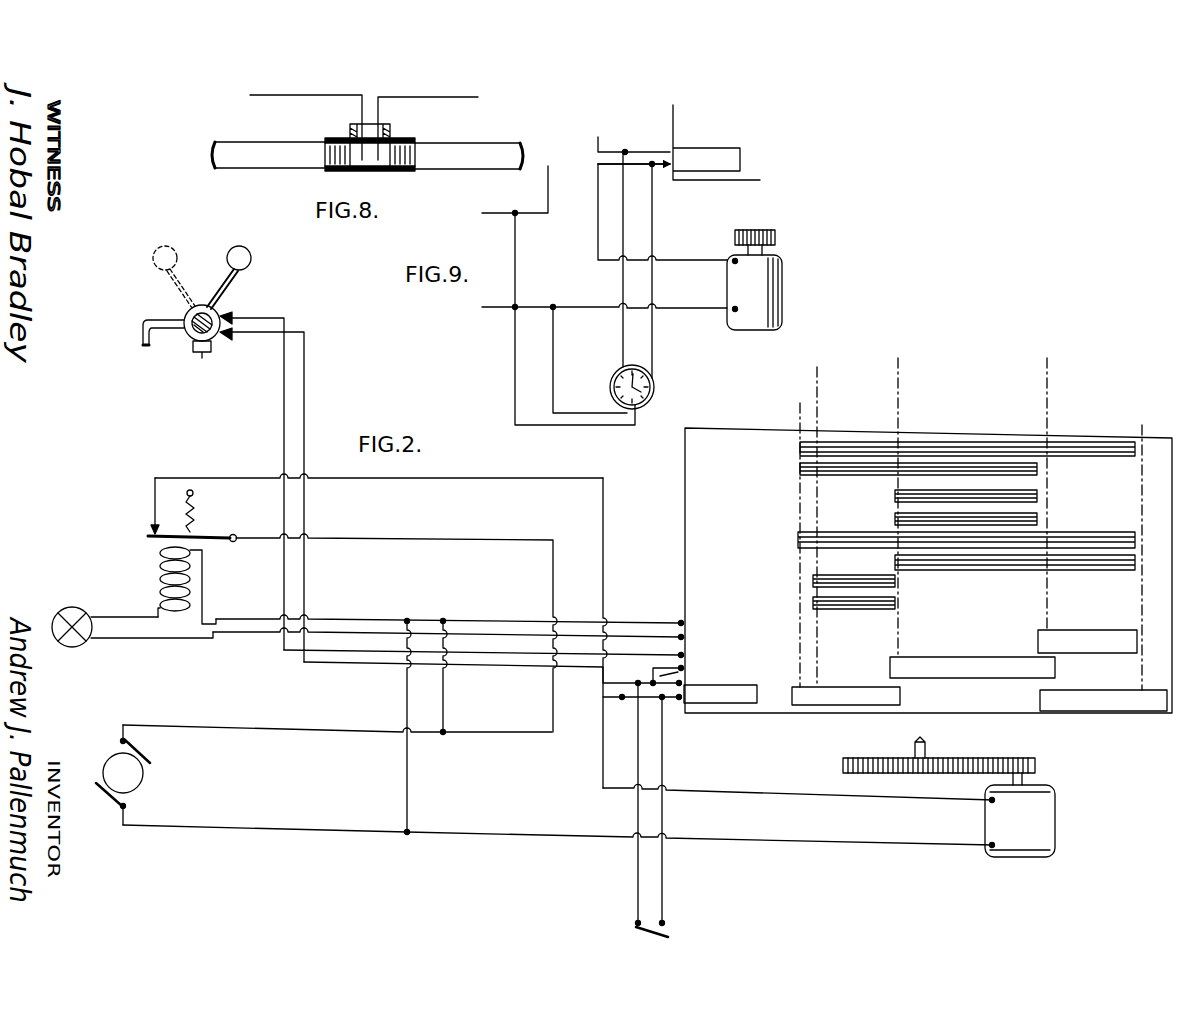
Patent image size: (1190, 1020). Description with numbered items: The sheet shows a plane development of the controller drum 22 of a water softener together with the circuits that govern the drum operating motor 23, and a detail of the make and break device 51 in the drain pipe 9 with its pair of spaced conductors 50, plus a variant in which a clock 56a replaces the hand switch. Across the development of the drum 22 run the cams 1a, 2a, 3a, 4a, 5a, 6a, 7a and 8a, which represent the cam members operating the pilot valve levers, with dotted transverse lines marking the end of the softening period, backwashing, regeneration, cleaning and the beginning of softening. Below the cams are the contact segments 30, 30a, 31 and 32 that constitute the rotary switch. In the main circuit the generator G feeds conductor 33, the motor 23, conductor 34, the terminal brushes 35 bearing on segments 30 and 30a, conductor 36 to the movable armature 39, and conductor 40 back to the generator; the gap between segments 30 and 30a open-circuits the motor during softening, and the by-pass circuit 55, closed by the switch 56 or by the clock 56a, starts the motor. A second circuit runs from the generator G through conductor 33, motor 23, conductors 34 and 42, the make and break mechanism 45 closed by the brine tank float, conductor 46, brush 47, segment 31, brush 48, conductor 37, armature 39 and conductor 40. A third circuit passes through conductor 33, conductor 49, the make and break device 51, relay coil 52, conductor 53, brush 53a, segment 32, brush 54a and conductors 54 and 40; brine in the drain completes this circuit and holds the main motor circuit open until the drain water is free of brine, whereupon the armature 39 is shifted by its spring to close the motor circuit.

In FIG. 8, the drain pipe 9 is at (367, 142).
In FIG. 8, the spaced conductors 50 is at (364, 127).
In FIG. 8, the make and break device 51 is at (362, 161).
In FIG. 2, the make and break device 51 is at (80, 610).
In FIG. 9, the contact segment 30 is at (708, 153).
In FIG. 2, the contact segment 30 is at (1118, 699).
In FIG. 9, the conductor 36 is at (645, 146).
In FIG. 2, the conductor 36 is at (683, 676).
In FIG. 9, the conductor 40 is at (550, 190).
In FIG. 2, the conductor 40 is at (472, 541).
In FIG. 9, the by-pass circuit 55 is at (645, 341).
In FIG. 2, the by-pass circuit 55 is at (648, 870).
In FIG. 9, the conductor 33 is at (497, 310).
In FIG. 2, the conductor 33 is at (492, 834).
In FIG. 9, the clock 56a is at (655, 388).
In FIG. 9, the drum operating motor 23 is at (754, 280).
In FIG. 2, the drum operating motor 23 is at (1047, 823).
In FIG. 2, the make and break mechanism 45 is at (197, 322).
In FIG. 2, the conductor 46 is at (306, 407).
In FIG. 2, the movable armature 39 is at (218, 533).
In FIG. 2, the relay coil 52 is at (156, 558).
In FIG. 2, the brush 54a is at (683, 616).
In FIG. 2, the conductor 54 is at (656, 623).
In FIG. 2, the brush 53a is at (683, 632).
In FIG. 2, the conductor 53 is at (430, 620).
In FIG. 2, the brush 47 is at (683, 648).
In FIG. 2, the brush 48 is at (683, 662).
In FIG. 2, the terminal brushes 35 is at (678, 700).
In FIG. 2, the conductor 37 is at (608, 553).
In FIG. 2, the conductor 49 is at (405, 780).
In FIG. 2, the conductor 42 is at (510, 680).
In FIG. 2, the generator G is at (142, 775).
In FIG. 2, the conductor 34 is at (757, 795).
In FIG. 2, the switch 56 is at (637, 933).
In FIG. 2, the drum 22 is at (748, 421).
In FIG. 2, the cam 1a is at (798, 470).
In FIG. 2, the cam 2a is at (894, 495).
In FIG. 2, the cam 3a is at (894, 519).
In FIG. 2, the cam 4a is at (797, 540).
In FIG. 2, the cam 5a is at (894, 563).
In FIG. 2, the cam 6a is at (812, 581).
In FIG. 2, the cam 7a is at (812, 603).
In FIG. 2, the cam 8a is at (1095, 458).
In FIG. 2, the contact segment 32 is at (1096, 624).
In FIG. 2, the contact segment 31 is at (958, 665).
In FIG. 2, the contact segment 30a is at (846, 683).